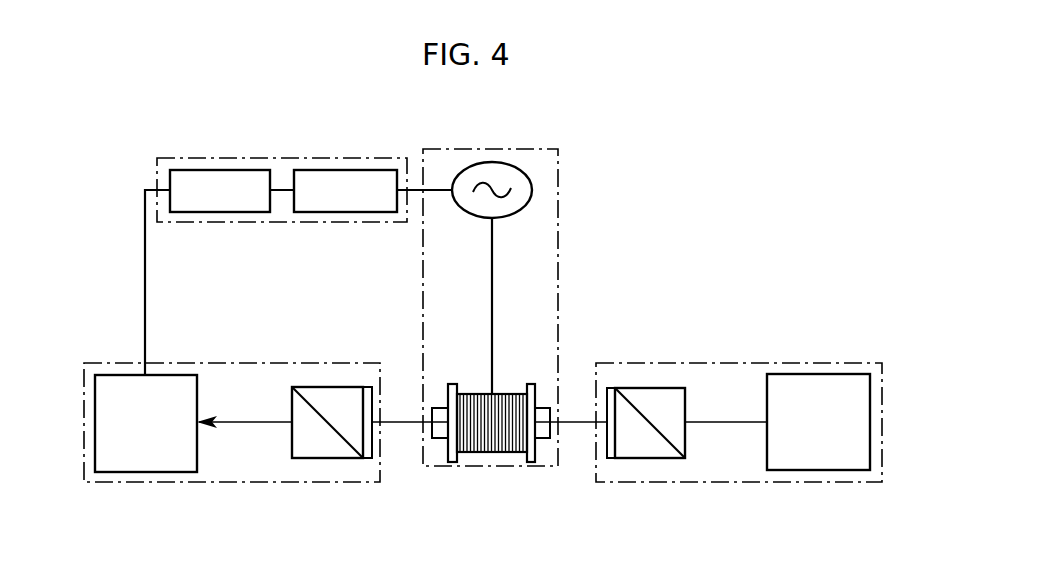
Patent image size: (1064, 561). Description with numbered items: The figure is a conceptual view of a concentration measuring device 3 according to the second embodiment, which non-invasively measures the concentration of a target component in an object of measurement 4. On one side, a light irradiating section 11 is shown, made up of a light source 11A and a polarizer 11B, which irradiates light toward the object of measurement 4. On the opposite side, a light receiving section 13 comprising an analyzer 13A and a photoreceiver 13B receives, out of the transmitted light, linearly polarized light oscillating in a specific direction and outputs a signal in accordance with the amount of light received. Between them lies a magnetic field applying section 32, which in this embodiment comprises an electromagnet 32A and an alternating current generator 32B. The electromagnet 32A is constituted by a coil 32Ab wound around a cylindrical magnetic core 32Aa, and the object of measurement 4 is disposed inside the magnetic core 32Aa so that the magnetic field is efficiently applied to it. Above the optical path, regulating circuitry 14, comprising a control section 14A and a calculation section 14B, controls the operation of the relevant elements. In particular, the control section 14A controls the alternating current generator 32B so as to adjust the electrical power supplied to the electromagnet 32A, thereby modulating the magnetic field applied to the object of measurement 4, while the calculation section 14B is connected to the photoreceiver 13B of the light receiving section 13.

The concentration measuring device 3 is at (600, 262).
The object of measurement 4 is at (544, 440).
The light irradiating section 11 is at (739, 390).
The light source 11A is at (826, 374).
The polarizer 11B is at (675, 388).
The light receiving section 13 is at (237, 391).
The analyzer 13A is at (345, 387).
The photoreceiver 13B is at (115, 375).
The regulating circuitry 14 is at (282, 160).
The control section 14A is at (352, 170).
The calculation section 14B is at (226, 170).
The magnetic field applying section 32 is at (529, 330).
The electromagnet 32A is at (496, 417).
The magnetic core 32Aa is at (538, 390).
The coil 32Ab is at (476, 452).
The alternating current generator 32B is at (532, 183).